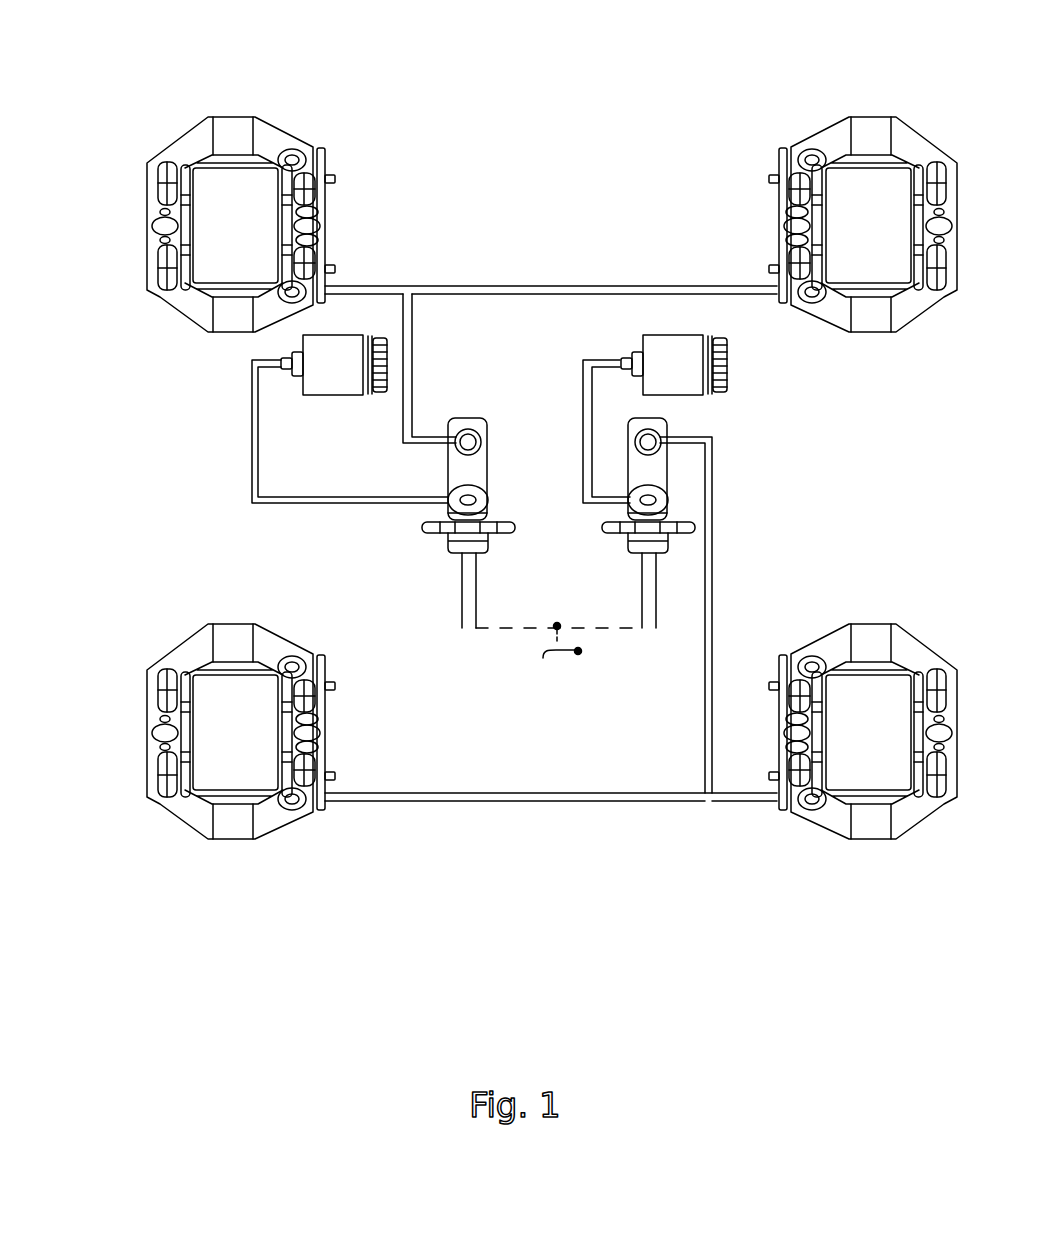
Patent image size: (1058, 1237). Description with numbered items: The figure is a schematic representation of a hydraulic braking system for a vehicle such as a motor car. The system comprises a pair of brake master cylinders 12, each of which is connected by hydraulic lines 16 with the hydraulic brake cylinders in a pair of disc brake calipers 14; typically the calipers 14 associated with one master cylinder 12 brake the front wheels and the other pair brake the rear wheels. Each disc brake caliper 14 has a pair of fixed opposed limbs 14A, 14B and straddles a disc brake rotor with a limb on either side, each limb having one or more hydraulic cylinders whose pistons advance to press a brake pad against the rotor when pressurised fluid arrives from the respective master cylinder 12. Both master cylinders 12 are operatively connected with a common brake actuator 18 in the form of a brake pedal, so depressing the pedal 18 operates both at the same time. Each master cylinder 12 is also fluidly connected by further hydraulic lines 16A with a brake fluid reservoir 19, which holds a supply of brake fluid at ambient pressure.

The brake master cylinder 12 is at (473, 418).
The disc brake caliper 14 is at (230, 128).
The fixed opposed limb 14A is at (153, 243).
The fixed opposed limb 14B is at (326, 200).
The hydraulic line 16 is at (612, 286).
The further hydraulic line 16A is at (251, 447).
The brake actuator 18 is at (565, 653).
The brake fluid reservoir 19 is at (323, 385).